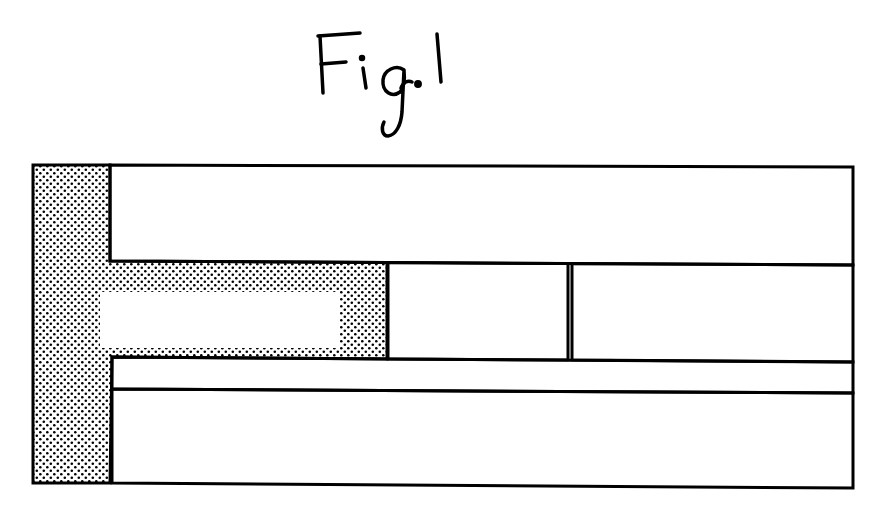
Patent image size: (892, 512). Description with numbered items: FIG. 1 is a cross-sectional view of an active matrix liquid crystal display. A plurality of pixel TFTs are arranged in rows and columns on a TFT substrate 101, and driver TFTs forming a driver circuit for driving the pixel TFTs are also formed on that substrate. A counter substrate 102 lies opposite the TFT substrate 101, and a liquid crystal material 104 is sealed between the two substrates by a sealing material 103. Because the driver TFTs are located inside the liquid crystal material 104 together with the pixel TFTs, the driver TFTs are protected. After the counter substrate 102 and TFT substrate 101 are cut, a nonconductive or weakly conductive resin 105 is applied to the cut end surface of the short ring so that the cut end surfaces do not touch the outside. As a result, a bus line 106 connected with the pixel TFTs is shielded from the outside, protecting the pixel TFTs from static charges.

The TFT substrate 101 is at (482, 438).
The counter substrate 102 is at (481, 215).
The sealing material 103 is at (478, 312).
The liquid crystal material 104 is at (712, 313).
The nonconductive or weakly conductive resin 105 is at (210, 324).
The bus line 106 is at (482, 376).